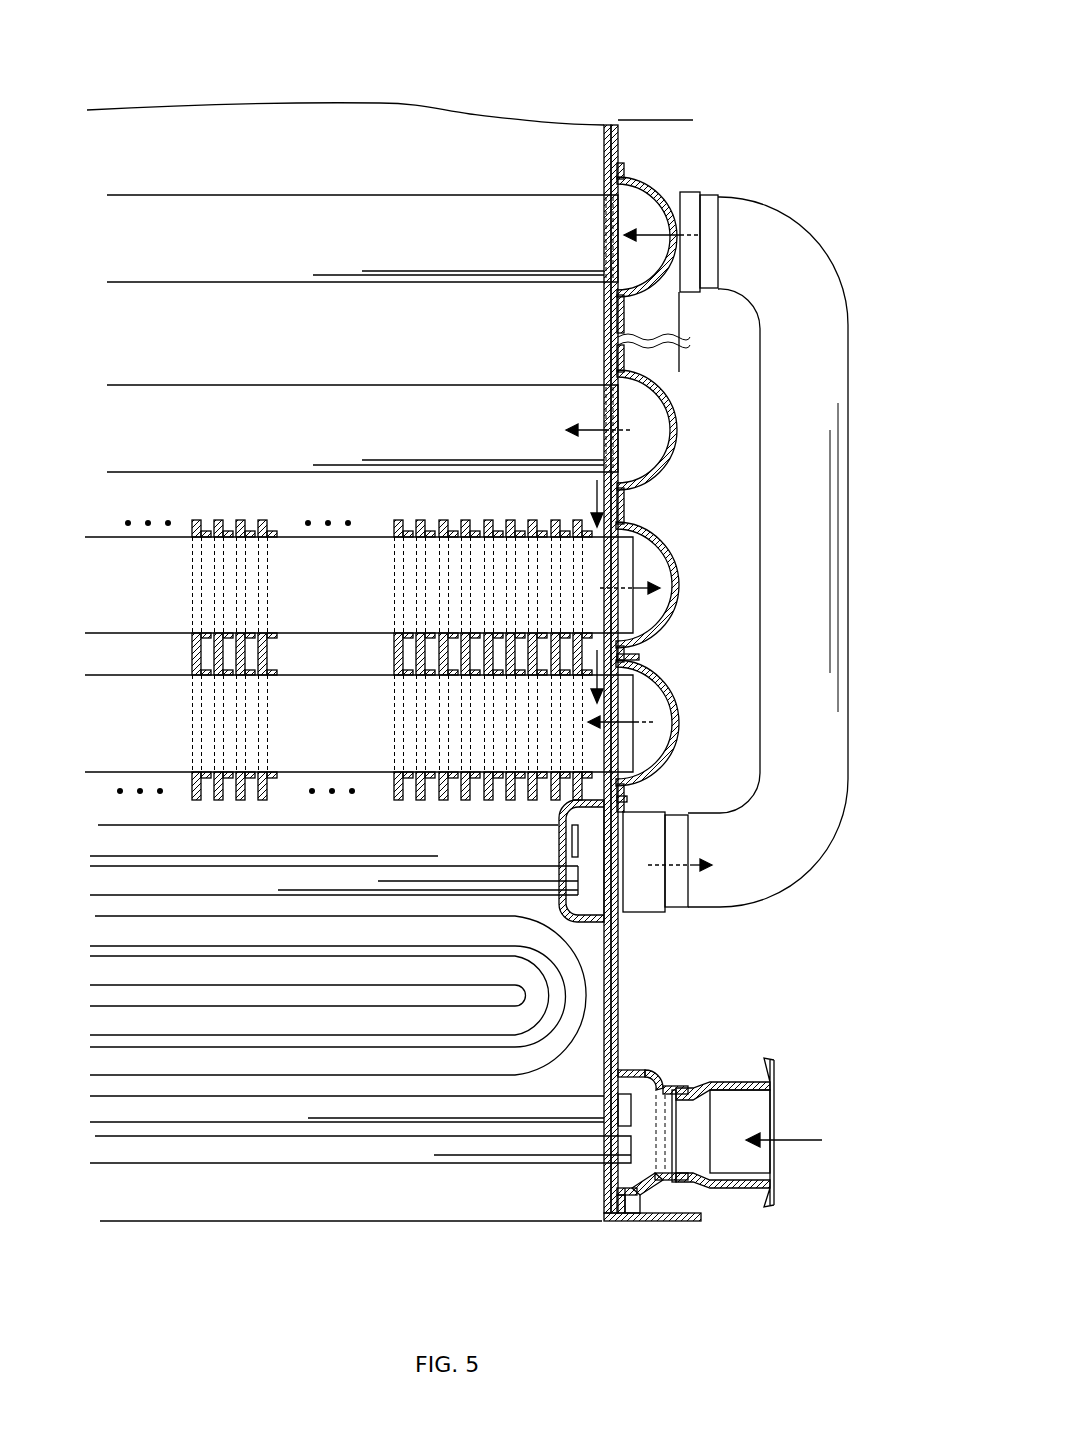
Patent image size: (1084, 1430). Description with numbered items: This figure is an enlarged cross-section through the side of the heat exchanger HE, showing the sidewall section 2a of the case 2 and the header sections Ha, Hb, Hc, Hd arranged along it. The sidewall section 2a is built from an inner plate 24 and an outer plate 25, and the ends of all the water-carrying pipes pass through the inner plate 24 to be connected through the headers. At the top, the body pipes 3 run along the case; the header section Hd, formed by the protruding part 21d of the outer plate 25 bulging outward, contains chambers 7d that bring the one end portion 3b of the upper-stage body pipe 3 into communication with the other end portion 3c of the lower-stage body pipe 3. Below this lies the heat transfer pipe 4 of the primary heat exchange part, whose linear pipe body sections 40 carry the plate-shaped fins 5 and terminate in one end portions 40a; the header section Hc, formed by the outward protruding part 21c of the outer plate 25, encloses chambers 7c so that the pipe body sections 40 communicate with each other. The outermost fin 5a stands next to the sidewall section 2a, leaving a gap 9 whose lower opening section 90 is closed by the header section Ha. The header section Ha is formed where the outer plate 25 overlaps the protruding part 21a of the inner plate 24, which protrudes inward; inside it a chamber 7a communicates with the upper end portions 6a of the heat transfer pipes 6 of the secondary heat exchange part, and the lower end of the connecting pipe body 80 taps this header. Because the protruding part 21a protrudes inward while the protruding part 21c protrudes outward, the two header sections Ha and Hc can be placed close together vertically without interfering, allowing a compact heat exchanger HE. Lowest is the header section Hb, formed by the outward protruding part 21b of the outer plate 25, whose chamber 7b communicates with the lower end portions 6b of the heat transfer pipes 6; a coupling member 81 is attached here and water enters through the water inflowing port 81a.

The heat exchanger HE is at (228, 72).
The case 2 is at (622, 166).
The sidewall section 2a is at (662, 44).
The inner plate 24 is at (606, 125).
The outer plate 25 is at (616, 125).
The body pipe 3 is at (285, 215).
The one end portion of the upper-stage body pipe 3b is at (604, 228).
The other end portion of the lower-stage body pipe 3c is at (604, 412).
The heat transfer pipe 4 is at (188, 521).
The fins 5 is at (243, 518).
The fin of an outermost end portion 5a is at (588, 530).
The pipe body sections 40 is at (355, 555).
The one end portions of the pipe body sections 40a is at (620, 582).
The heat transfer pipes 6 is at (272, 1165).
The upper end portions of the heat transfer pipes 6a is at (576, 880).
The lower end portions of the heat transfer pipes 6b is at (605, 1112).
The chamber 7a is at (700, 905).
The chamber 7b is at (642, 1168).
The chamber 7c is at (652, 556).
The chamber 7d is at (652, 258).
The gap 9 is at (655, 650).
The protruding part 21a is at (570, 905).
The protruding part 21b is at (660, 1182).
The protruding part 21c is at (668, 520).
The protruding part 21d is at (684, 370).
The connecting pipe body 80 is at (840, 330).
The coupling member 81 is at (738, 1190).
The water inflowing port 81a is at (760, 1107).
The lower opening section 90 is at (622, 792).
The header section Ha is at (625, 897).
The header section Hb is at (645, 1070).
The header section Hc is at (680, 587).
The header section Hd is at (684, 385).